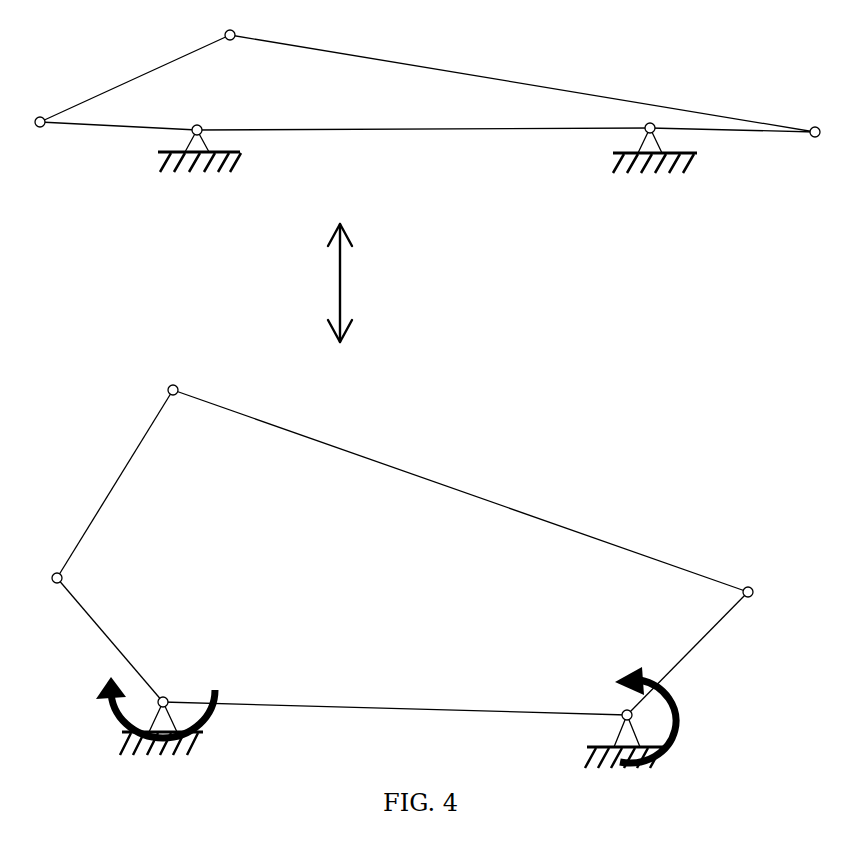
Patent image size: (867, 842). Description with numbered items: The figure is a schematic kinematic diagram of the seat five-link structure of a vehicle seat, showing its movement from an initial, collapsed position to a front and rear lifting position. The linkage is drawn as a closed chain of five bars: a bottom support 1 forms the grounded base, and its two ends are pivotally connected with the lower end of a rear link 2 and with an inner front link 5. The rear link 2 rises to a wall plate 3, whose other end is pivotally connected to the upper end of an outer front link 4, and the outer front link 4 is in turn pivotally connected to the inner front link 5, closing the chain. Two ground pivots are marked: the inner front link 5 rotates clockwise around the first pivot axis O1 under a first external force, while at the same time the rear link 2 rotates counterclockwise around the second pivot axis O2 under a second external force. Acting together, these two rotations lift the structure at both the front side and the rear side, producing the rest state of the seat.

The bottom support 1 is at (300, 710).
The rear link 2 is at (695, 648).
The wall plate 3 is at (523, 510).
The outer front link 4 is at (130, 458).
The inner front link 5 is at (100, 632).
The first pivot axis O1 is at (197, 130).
The second pivot axis O2 is at (650, 128).